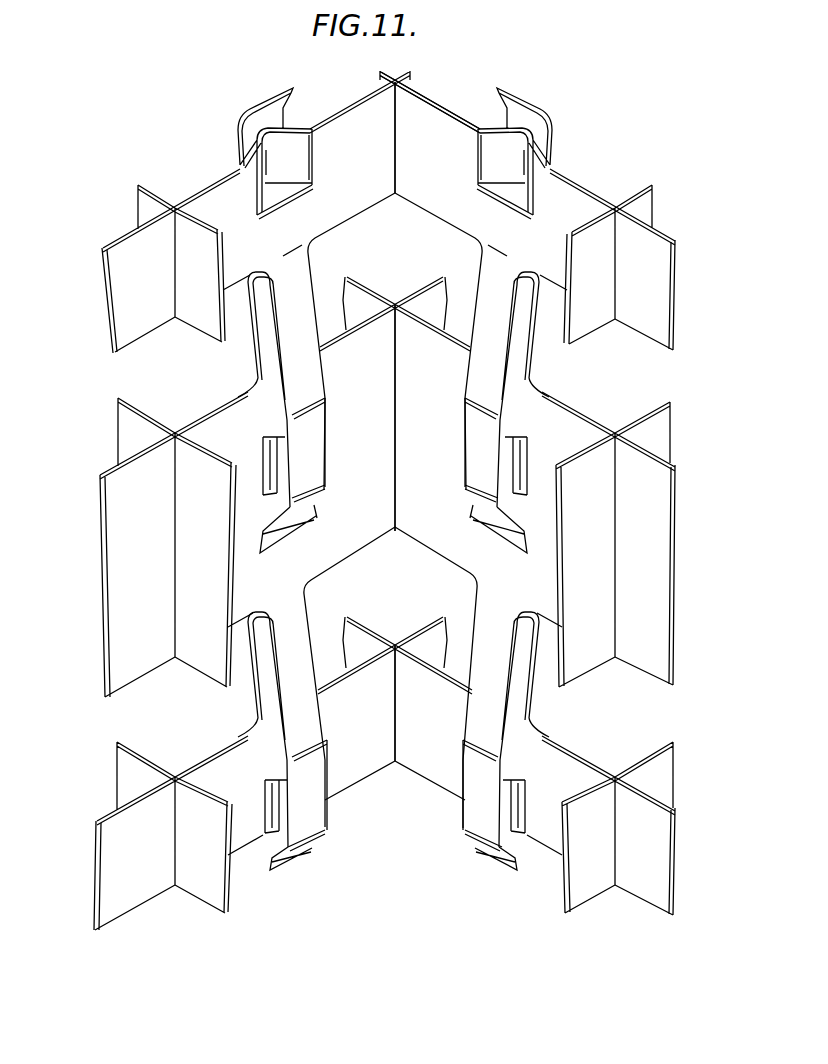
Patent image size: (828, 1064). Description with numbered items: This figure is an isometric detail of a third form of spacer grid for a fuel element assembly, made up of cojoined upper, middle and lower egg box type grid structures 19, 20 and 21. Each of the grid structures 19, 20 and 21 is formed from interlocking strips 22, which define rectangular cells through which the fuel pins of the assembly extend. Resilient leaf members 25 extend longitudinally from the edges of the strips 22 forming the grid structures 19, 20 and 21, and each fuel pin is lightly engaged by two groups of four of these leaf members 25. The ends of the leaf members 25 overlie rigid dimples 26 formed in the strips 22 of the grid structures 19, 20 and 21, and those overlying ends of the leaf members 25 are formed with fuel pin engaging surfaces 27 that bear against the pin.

The upper egg box type grid structure 19 is at (128, 311).
The middle egg box type grid structure 20 is at (132, 562).
The lower egg box type grid structure 21 is at (138, 881).
The interlocking strip 22 is at (130, 268).
The resilient leaf member 25 is at (255, 138).
The rigid dimple 26 is at (288, 156).
The fuel pin engaging surface 27 is at (307, 458).